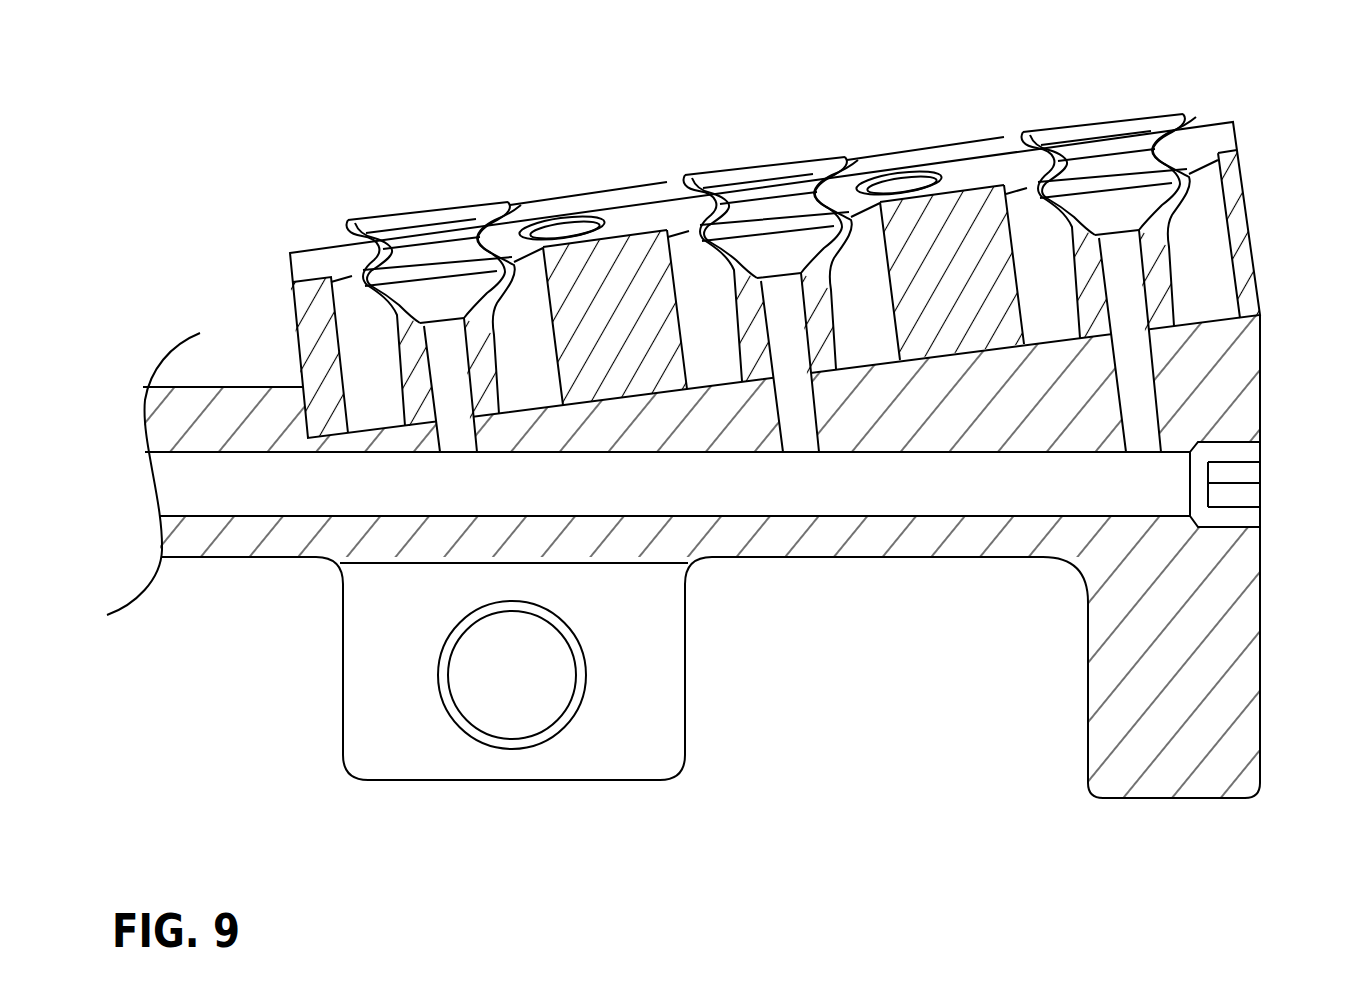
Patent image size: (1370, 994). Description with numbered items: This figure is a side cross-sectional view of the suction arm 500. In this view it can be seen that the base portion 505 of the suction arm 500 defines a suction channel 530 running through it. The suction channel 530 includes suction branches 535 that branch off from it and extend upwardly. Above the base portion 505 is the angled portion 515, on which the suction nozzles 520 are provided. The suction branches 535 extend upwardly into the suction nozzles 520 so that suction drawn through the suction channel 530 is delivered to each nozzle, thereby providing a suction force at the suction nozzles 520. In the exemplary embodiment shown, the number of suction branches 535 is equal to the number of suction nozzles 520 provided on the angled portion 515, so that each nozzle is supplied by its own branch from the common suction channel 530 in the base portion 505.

The suction arm 500 is at (720, 480).
The base portion 505 is at (545, 781).
The angled portion 515 is at (312, 250).
The suction nozzle 520 is at (757, 175).
The suction channel 530 is at (300, 488).
The suction branch 535 is at (1155, 398).